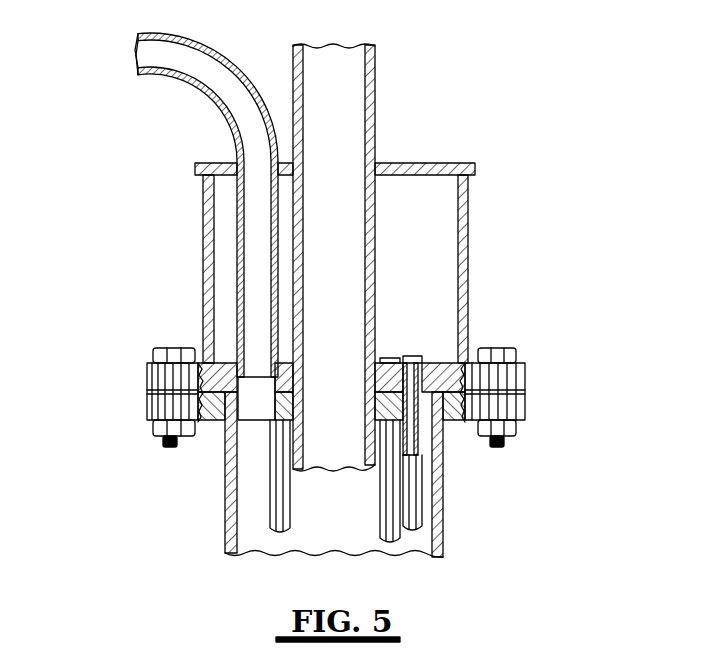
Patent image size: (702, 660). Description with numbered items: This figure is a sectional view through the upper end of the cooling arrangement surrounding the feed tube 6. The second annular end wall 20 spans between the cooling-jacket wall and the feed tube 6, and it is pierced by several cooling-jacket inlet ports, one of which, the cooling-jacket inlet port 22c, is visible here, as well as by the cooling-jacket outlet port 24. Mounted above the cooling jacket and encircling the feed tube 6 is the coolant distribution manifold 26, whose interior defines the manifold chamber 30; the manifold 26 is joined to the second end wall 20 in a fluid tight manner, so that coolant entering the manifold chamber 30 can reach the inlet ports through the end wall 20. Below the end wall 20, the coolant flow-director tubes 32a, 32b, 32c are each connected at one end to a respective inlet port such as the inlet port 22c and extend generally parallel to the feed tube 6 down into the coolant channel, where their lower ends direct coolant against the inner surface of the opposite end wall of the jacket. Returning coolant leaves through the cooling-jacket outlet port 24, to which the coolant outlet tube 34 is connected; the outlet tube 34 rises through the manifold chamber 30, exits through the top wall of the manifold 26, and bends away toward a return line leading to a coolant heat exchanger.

The feed tube 6 is at (376, 103).
The second annular end wall 20 is at (444, 456).
The cooling-jacket inlet port 22c is at (413, 357).
The cooling-jacket outlet port 24 is at (240, 452).
The coolant distribution manifold 26 is at (503, 242).
The manifold chamber 30 is at (469, 201).
The coolant flow-director tube 32a is at (290, 492).
The coolant flow-director tube 32b is at (382, 520).
The coolant flow-director tube 32c is at (423, 508).
The coolant outlet tube 34 is at (237, 270).